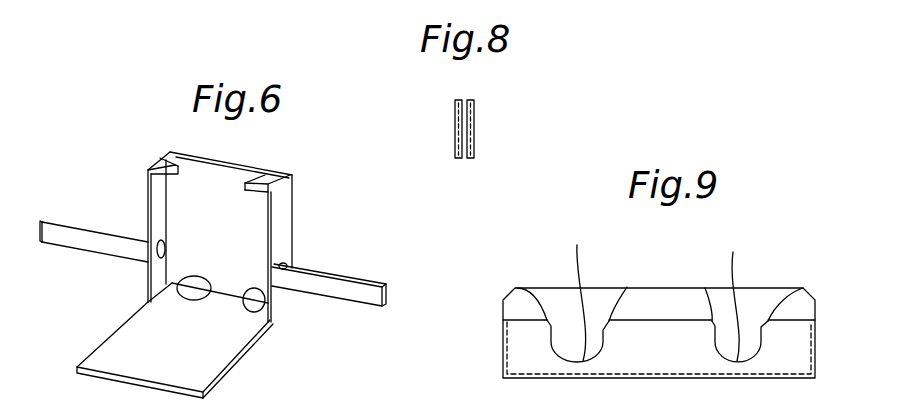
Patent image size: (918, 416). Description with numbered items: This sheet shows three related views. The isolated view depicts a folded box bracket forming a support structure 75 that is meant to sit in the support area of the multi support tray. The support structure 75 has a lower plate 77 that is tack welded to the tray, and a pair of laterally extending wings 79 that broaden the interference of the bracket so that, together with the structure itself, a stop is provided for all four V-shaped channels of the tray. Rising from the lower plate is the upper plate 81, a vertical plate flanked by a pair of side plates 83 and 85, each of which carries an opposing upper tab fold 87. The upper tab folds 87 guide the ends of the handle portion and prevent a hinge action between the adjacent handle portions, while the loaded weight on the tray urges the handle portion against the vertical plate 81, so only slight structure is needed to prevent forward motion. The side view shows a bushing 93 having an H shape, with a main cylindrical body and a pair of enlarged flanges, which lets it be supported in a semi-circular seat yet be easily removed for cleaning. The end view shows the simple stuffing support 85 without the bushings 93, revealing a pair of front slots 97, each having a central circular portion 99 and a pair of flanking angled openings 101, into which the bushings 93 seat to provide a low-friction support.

In FIG. 6, the support structure 75 is at (116, 156).
In FIG. 6, the lower plate 77 is at (196, 353).
In FIG. 6, the laterally extending wings 79 is at (73, 232).
In FIG. 6, the upper plate 81 is at (232, 256).
In FIG. 6, the side plate 83 is at (163, 217).
In FIG. 6, the side plate 85 is at (285, 220).
In FIG. 9, the side plate 85 is at (773, 235).
In FIG. 6, the upper tab folds 87 is at (165, 163).
In FIG. 8, the bushing 93 is at (471, 159).
In FIG. 9, the front slots 97 is at (565, 318).
In FIG. 9, the central circular portion 99 is at (656, 293).
In FIG. 9, the angled openings 101 is at (517, 288).